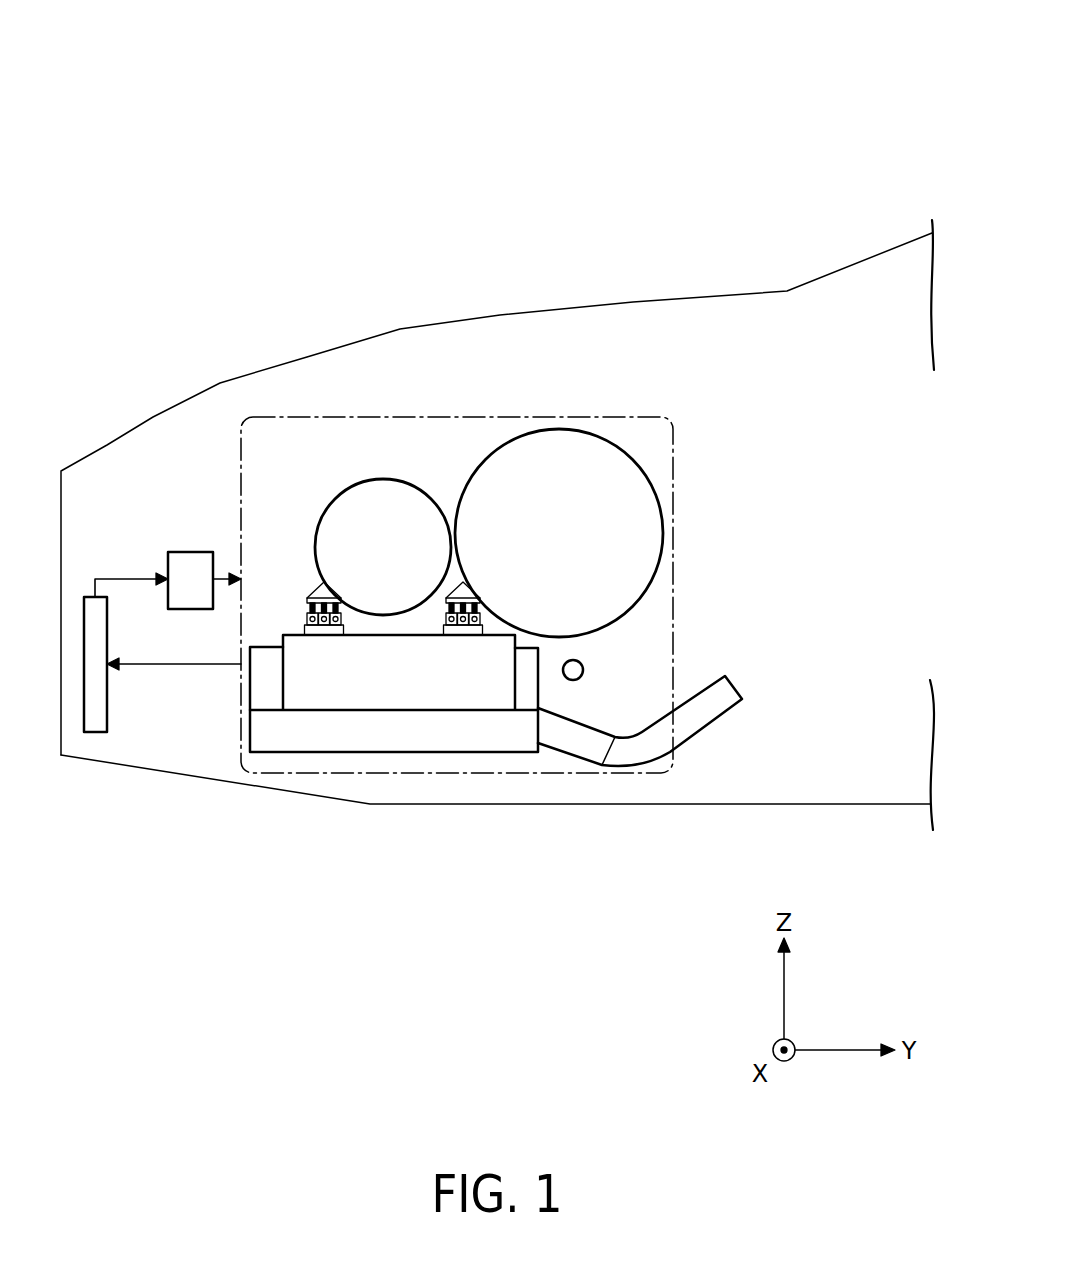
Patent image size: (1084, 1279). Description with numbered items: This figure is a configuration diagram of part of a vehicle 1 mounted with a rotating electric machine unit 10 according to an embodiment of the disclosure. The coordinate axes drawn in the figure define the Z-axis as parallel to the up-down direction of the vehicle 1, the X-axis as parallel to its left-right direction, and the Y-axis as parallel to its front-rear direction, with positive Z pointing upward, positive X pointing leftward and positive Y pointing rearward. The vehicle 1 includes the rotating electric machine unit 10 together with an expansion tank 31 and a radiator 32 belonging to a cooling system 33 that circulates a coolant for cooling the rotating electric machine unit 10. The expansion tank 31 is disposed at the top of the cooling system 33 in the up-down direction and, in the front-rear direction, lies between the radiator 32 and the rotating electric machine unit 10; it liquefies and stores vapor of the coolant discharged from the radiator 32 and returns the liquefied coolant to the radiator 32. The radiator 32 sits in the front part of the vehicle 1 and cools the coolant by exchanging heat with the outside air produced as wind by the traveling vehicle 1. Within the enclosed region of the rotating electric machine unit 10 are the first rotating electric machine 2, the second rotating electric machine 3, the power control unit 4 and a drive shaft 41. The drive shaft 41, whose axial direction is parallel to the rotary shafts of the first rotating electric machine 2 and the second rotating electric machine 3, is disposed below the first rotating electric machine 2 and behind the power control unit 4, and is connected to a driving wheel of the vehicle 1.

The vehicle 1 is at (806, 92).
The rotating electric machine unit 10 is at (672, 405).
The first rotating electric machine 2 is at (555, 429).
The second rotating electric machine 3 is at (378, 479).
The power control unit 4 is at (281, 615).
The drive shaft 41 is at (583, 662).
The expansion tank 31 is at (192, 552).
The radiator 32 is at (92, 733).
The cooling system 33 is at (135, 579).